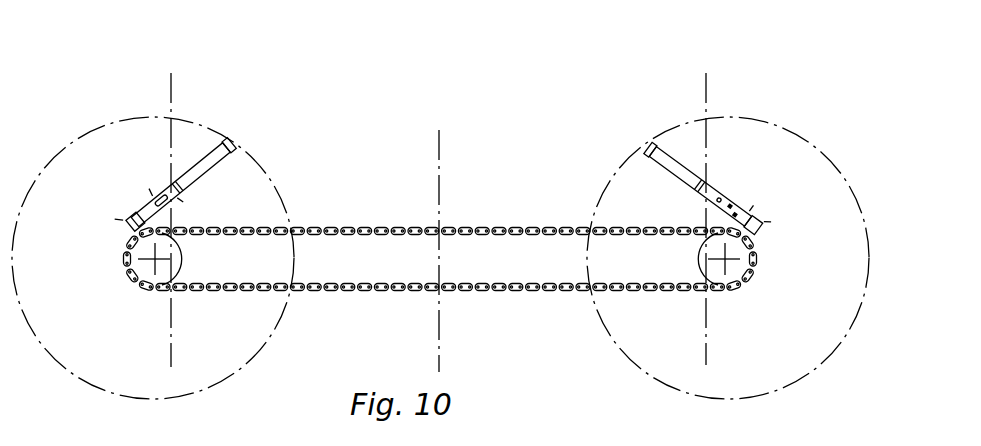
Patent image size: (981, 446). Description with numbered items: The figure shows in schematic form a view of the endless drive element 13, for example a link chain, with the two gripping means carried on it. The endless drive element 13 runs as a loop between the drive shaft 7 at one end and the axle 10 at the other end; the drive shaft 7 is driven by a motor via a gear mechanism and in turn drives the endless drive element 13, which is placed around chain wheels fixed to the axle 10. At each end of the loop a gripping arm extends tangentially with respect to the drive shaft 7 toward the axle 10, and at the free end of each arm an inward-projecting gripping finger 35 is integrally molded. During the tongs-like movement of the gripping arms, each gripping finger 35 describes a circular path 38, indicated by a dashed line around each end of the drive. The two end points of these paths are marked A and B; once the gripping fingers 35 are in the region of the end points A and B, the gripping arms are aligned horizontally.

The drive shaft 7 is at (128, 272).
The axle 10 is at (737, 262).
The endless drive element 13 is at (364, 228).
The gripping finger 35 is at (650, 138).
The circular path 38 is at (792, 131).
The end point A is at (588, 294).
The end point B is at (585, 222).